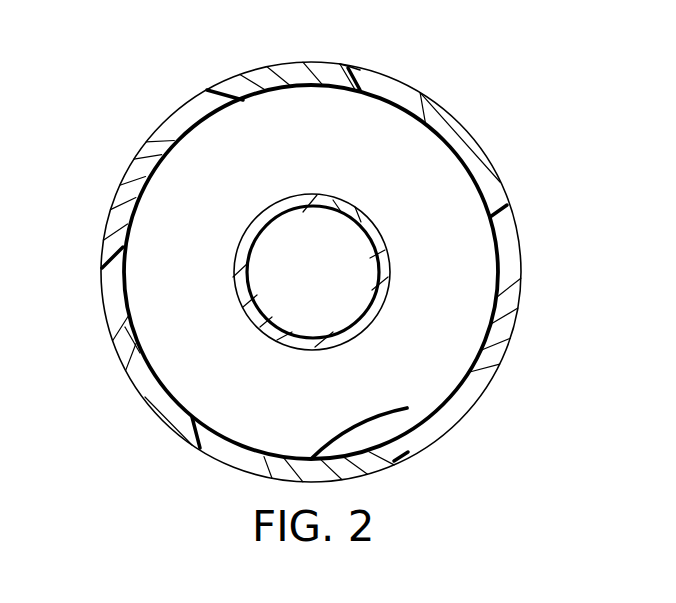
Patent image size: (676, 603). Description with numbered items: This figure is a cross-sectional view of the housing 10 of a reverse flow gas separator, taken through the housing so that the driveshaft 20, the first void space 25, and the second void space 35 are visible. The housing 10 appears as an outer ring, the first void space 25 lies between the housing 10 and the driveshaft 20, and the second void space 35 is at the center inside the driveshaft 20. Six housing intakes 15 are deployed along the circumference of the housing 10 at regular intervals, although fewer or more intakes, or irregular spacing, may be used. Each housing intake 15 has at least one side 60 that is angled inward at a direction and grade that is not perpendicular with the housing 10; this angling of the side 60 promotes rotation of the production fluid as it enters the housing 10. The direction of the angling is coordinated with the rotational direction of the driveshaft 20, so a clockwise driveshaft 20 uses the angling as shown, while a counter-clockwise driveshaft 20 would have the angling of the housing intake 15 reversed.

The housing 10 is at (255, 80).
The housing intake 15 is at (190, 112).
The side 60 is at (353, 77).
The first void space 25 is at (407, 408).
The driveshaft 20 is at (378, 246).
The second void space 35 is at (280, 272).